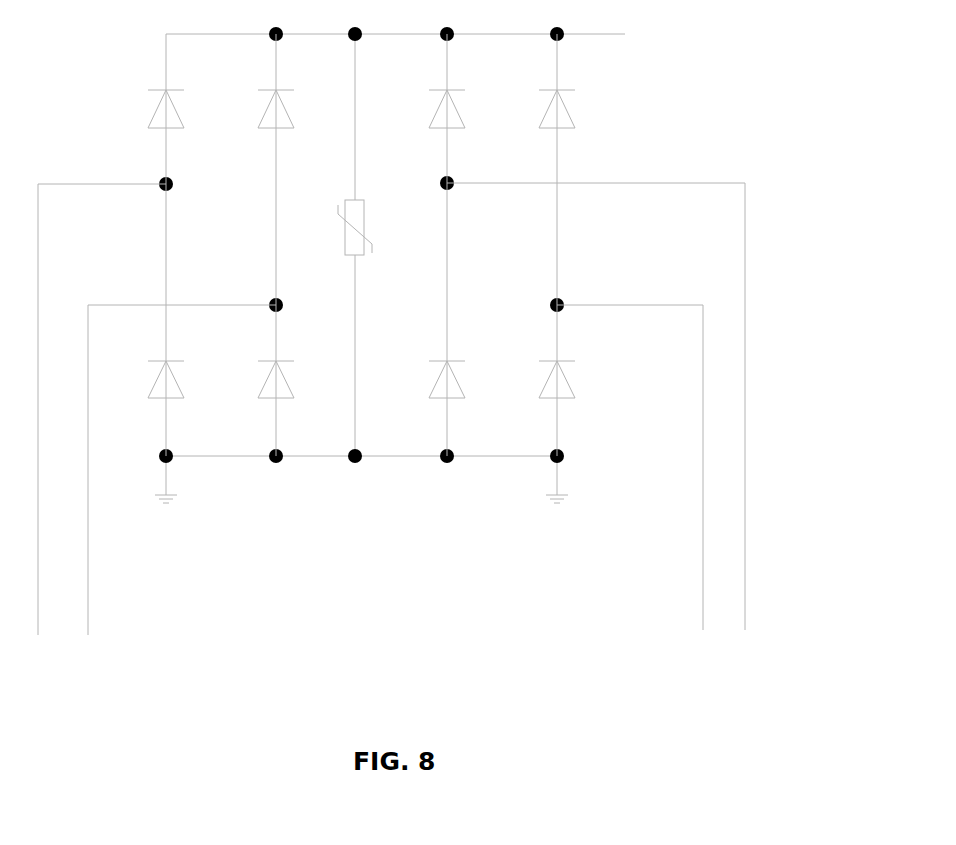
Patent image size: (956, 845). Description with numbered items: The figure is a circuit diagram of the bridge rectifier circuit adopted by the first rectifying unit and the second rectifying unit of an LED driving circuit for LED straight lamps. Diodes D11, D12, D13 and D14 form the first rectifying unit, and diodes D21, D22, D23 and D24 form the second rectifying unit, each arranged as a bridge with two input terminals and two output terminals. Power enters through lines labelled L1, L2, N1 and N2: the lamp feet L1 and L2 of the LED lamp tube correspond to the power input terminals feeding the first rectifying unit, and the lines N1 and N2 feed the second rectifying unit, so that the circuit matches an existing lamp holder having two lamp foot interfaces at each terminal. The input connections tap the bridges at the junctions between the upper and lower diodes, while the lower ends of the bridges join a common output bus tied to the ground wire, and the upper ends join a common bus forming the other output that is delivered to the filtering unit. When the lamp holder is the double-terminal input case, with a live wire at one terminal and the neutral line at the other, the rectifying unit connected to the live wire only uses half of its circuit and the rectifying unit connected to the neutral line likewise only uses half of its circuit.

The diode D11 is at (137, 109).
The diode D12 is at (256, 169).
The diode D13 is at (144, 320).
The diode D14 is at (259, 380).
The diode D21 is at (430, 108).
The diode D22 is at (539, 169).
The diode D23 is at (427, 319).
The diode D24 is at (540, 380).
The lamp foot L1 is at (96, 426).
The lamp foot L2 is at (177, 487).
The neutral terminal N1 is at (638, 487).
The neutral terminal N2 is at (605, 426).